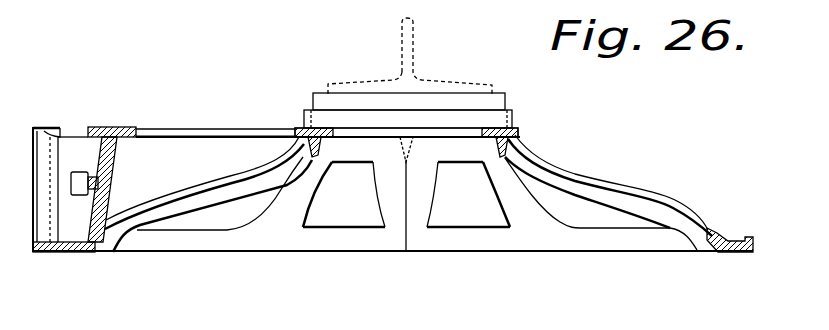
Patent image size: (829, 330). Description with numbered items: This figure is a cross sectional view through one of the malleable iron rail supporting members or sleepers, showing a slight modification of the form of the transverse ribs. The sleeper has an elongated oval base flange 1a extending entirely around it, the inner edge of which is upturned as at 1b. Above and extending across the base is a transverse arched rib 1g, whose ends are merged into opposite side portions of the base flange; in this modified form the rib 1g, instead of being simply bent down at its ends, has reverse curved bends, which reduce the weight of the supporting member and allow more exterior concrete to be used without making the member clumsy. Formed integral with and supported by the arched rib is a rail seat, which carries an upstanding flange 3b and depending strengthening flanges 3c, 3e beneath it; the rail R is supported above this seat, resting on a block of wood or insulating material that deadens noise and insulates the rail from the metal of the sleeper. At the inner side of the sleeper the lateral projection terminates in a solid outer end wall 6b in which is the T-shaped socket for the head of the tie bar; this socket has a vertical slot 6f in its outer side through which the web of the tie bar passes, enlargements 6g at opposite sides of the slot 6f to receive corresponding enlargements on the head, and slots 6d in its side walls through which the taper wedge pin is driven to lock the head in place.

The enlargements 6g is at (40, 147).
The vertical slot 6f is at (62, 143).
The outer end wall 6b is at (118, 137).
The slots 6d is at (78, 197).
The base flange 1a is at (753, 252).
The upturned inner edge of base flange 1b is at (552, 222).
The transverse arched rib 1g is at (257, 170).
The upstanding flange 3b is at (335, 120).
The depending strengthening flange 3c is at (312, 158).
The depending strengthening flange 3e is at (406, 250).
The rail R is at (407, 43).